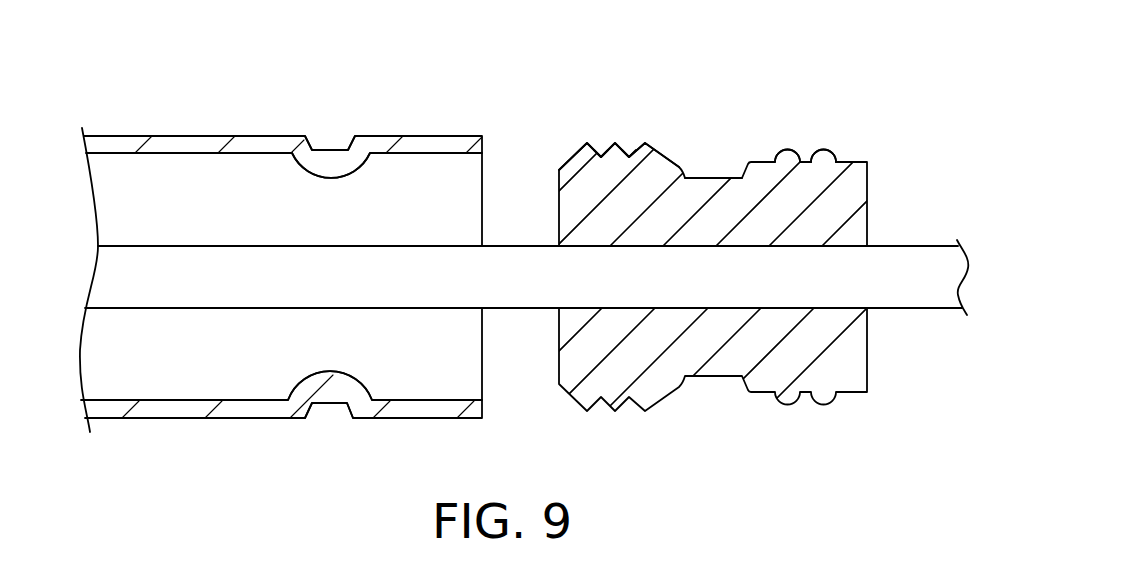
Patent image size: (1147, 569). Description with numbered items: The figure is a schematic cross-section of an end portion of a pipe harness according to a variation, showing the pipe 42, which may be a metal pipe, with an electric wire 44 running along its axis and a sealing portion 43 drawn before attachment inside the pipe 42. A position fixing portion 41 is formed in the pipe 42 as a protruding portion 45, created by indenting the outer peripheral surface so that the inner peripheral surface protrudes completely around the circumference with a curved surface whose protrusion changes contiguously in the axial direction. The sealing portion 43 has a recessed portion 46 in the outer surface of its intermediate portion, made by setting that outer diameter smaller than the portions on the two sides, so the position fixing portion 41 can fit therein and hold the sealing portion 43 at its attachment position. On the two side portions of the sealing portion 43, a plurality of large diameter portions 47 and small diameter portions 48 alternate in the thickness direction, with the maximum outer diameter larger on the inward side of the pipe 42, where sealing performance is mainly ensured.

The position fixing portion 41 is at (359, 248).
The protruding portion 45 is at (333, 162).
The pipe 42 is at (190, 135).
The sealing portion 43 is at (857, 180).
The electric wire 44 is at (507, 244).
The recessed portion 46 is at (710, 177).
The large diameter portion 47 is at (587, 142).
The small diameter portion 48 is at (601, 156).